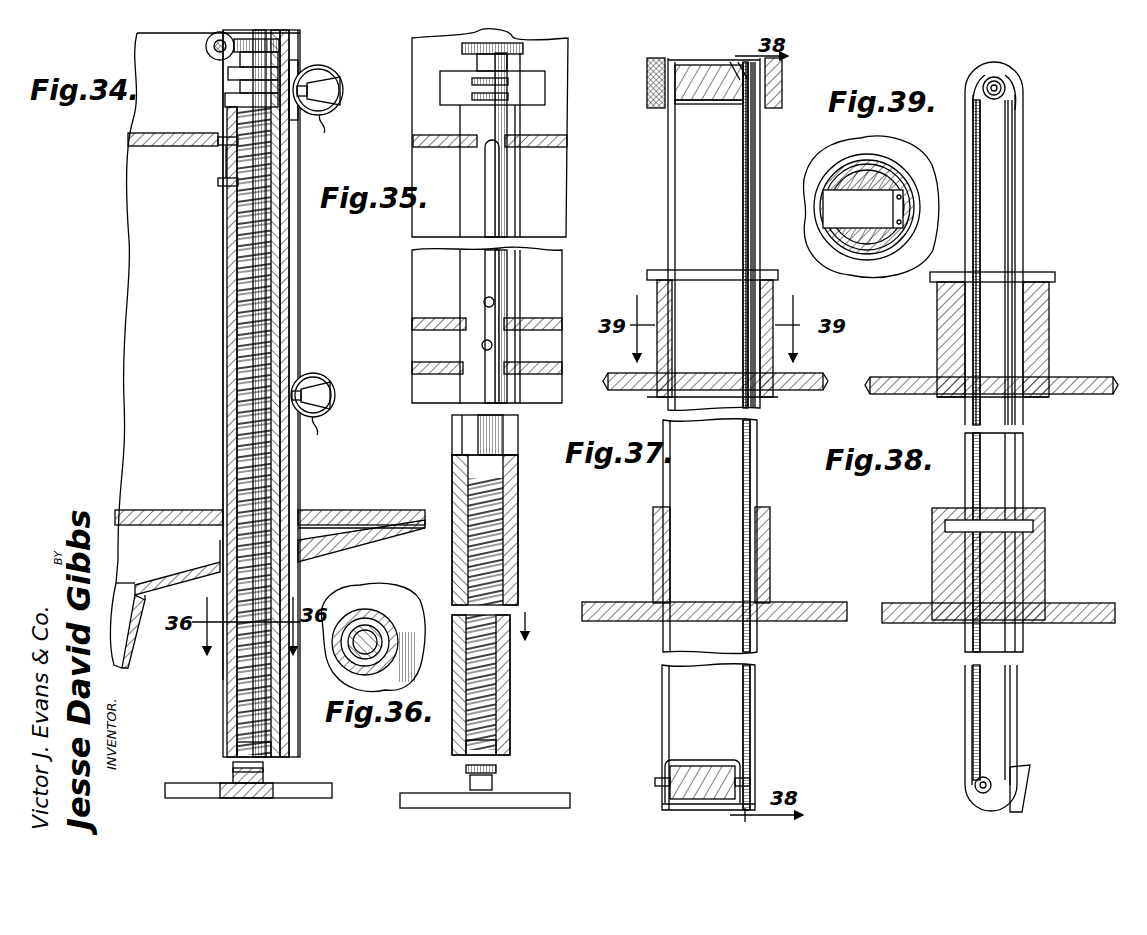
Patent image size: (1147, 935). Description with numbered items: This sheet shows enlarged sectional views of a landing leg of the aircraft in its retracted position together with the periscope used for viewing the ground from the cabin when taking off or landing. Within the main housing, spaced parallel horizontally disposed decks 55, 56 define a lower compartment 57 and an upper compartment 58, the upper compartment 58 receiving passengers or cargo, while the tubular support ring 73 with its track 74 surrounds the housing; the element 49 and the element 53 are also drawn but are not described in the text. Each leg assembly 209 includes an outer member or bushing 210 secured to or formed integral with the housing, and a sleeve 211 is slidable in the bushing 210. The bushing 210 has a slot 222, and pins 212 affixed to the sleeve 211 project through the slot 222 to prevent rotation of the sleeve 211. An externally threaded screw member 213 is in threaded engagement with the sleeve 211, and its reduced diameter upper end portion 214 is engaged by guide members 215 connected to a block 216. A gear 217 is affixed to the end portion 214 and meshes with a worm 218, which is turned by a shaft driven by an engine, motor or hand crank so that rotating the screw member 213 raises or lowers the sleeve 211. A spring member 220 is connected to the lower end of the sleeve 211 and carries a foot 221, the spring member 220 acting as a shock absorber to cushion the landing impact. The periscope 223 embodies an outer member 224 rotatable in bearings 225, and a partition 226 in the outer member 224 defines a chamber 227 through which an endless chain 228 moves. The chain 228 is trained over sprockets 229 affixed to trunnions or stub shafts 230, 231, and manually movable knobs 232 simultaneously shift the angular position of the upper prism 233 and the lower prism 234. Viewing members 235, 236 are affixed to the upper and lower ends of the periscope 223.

In FIG. 34, the flange wedge 49 is at (290, 515).
In FIG. 34, the foot 53 is at (125, 668).
In FIG. 34, the deck 55 is at (180, 500).
In FIG. 34, the deck 56 is at (128, 140).
In FIG. 35, the deck 56 is at (568, 138).
In FIG. 34, the lower compartment 57 is at (90, 501).
In FIG. 34, the upper compartment 58 is at (162, 64).
In FIG. 34, the support ring 73 is at (343, 428).
In FIG. 34, the track 74 is at (346, 100).
In FIG. 34, the leg assembly 209 is at (224, 665).
In FIG. 35, the leg assembly 209 is at (520, 568).
In FIG. 34, the bushing 210 is at (250, 80).
In FIG. 36, the bushing 210 is at (400, 668).
In FIG. 35, the bushing 210 is at (510, 525).
In FIG. 34, the sleeve 211 is at (272, 728).
In FIG. 35, the sleeve 211 is at (498, 730).
In FIG. 34, the pin 212 is at (218, 150).
In FIG. 35, the pin 212 is at (494, 302).
In FIG. 34, the screw member 213 is at (280, 270).
In FIG. 36, the screw member 213 is at (348, 648).
In FIG. 35, the screw member 213 is at (495, 500).
In FIG. 34, the upper end portion 214 is at (250, 82).
In FIG. 35, the upper end portion 214 is at (508, 82).
In FIG. 34, the guide member 215 is at (225, 98).
In FIG. 35, the guide member 215 is at (472, 96).
In FIG. 34, the block 216 is at (312, 70).
In FIG. 35, the block 216 is at (535, 97).
In FIG. 34, the gear 217 is at (300, 48).
In FIG. 35, the gear 217 is at (525, 48).
In FIG. 34, the worm 218 is at (205, 44).
In FIG. 34, the spring member 220 is at (270, 762).
In FIG. 35, the spring member 220 is at (496, 770).
In FIG. 34, the foot 221 is at (320, 783).
In FIG. 36, the foot 221 is at (395, 610).
In FIG. 35, the foot 221 is at (555, 795).
In FIG. 34, the slot 222 is at (224, 418).
In FIG. 35, the slot 222 is at (518, 450).
In FIG. 37, the periscope 223 is at (660, 703).
In FIG. 39, the periscope 223 is at (870, 262).
In FIG. 38, the periscope 223 is at (962, 688).
In FIG. 37, the outer member 224 is at (758, 470).
In FIG. 38, the outer member 224 is at (1022, 496).
In FIG. 37, the bearing 225 is at (775, 292).
In FIG. 39, the bearing 225 is at (865, 212).
In FIG. 38, the bearing 225 is at (1045, 335).
In FIG. 37, the partition 226 is at (748, 262).
In FIG. 37, the chamber 227 is at (750, 315).
In FIG. 38, the chamber 227 is at (1010, 245).
In FIG. 37, the endless chain 228 is at (752, 150).
In FIG. 38, the endless chain 228 is at (975, 180).
In FIG. 37, the sprocket 229 is at (765, 65).
In FIG. 38, the sprocket 229 is at (1006, 90).
In FIG. 37, the trunnion 230 is at (738, 104).
In FIG. 38, the trunnion 230 is at (1002, 84).
In FIG. 37, the trunnion 231 is at (753, 775).
In FIG. 38, the trunnion 231 is at (975, 786).
In FIG. 37, the knob 232 is at (657, 108).
In FIG. 37, the upper prism 233 is at (705, 100).
In FIG. 38, the upper prism 233 is at (975, 85).
In FIG. 37, the lower prism 234 is at (700, 765).
In FIG. 38, the viewing member 235 is at (970, 110).
In FIG. 38, the viewing member 236 is at (1020, 770).